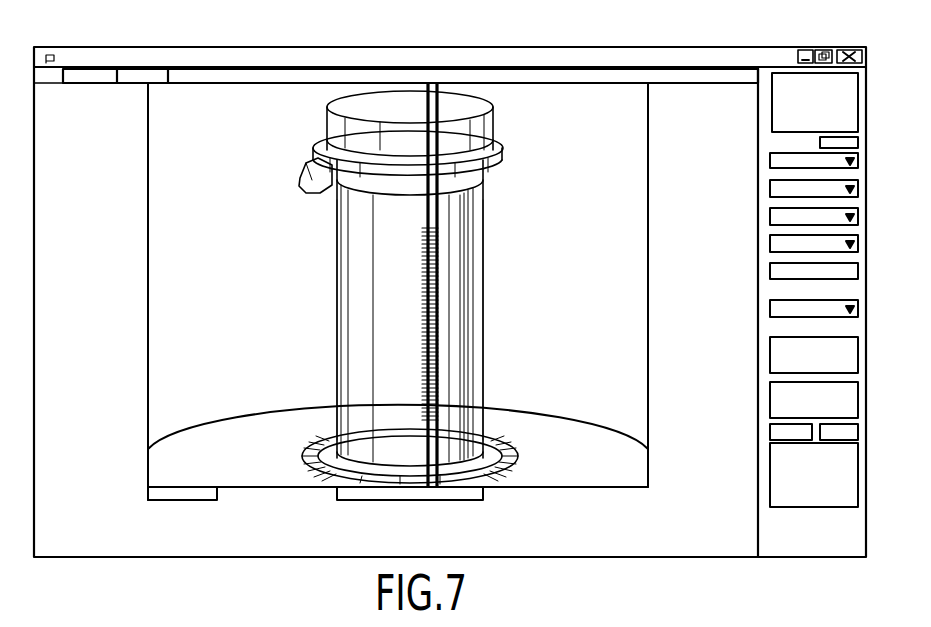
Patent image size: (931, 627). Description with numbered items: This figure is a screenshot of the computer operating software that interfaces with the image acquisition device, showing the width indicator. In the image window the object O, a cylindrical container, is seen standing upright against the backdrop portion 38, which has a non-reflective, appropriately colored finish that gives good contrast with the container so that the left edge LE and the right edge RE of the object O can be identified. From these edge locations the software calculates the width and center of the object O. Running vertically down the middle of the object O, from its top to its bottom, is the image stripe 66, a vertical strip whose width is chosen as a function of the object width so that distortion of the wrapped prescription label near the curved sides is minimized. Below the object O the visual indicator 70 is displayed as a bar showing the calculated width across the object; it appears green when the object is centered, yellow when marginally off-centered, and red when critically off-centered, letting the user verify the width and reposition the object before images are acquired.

The backdrop portion 38 is at (243, 233).
The image stripe 66 is at (440, 128).
The visual indicator 70 is at (348, 500).
The object O is at (356, 268).
The left edge LE is at (336, 339).
The right edge RE is at (485, 272).